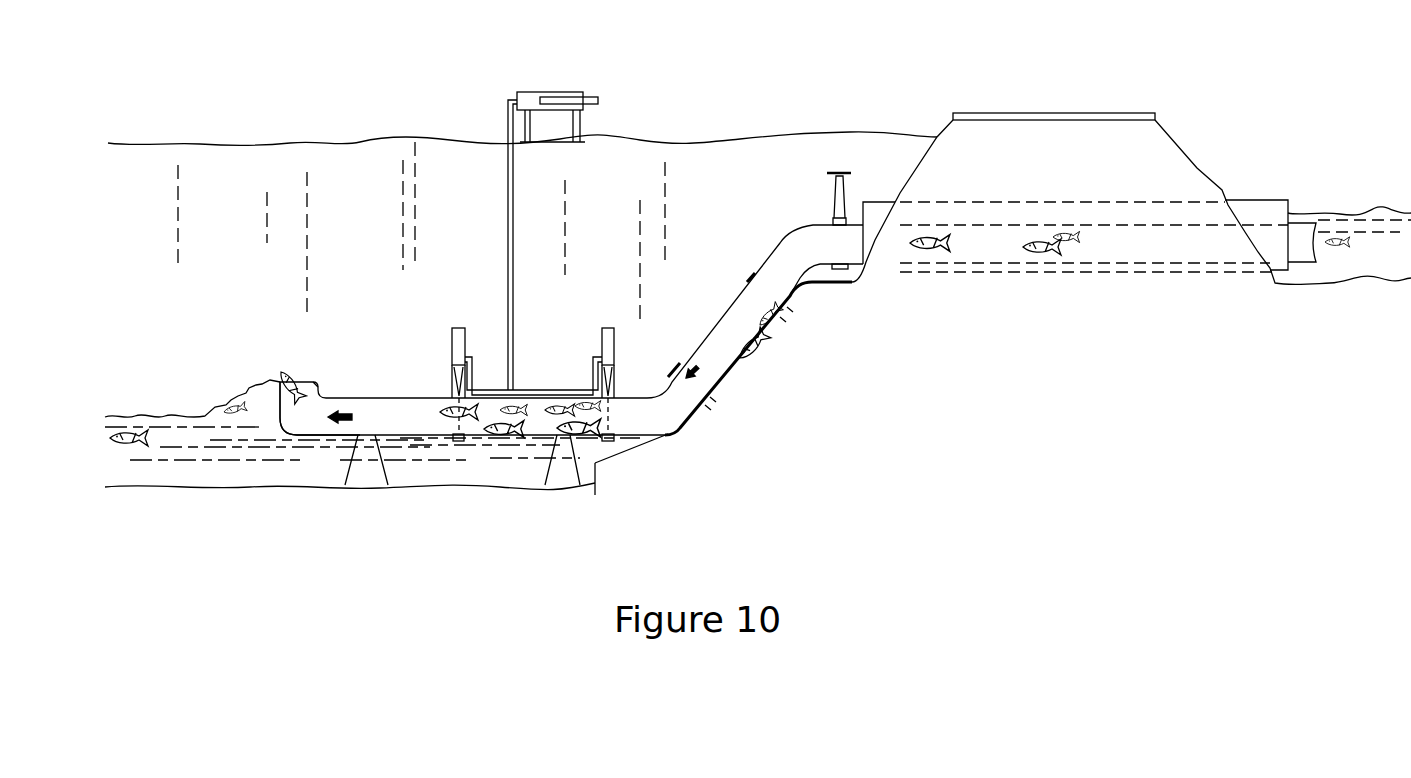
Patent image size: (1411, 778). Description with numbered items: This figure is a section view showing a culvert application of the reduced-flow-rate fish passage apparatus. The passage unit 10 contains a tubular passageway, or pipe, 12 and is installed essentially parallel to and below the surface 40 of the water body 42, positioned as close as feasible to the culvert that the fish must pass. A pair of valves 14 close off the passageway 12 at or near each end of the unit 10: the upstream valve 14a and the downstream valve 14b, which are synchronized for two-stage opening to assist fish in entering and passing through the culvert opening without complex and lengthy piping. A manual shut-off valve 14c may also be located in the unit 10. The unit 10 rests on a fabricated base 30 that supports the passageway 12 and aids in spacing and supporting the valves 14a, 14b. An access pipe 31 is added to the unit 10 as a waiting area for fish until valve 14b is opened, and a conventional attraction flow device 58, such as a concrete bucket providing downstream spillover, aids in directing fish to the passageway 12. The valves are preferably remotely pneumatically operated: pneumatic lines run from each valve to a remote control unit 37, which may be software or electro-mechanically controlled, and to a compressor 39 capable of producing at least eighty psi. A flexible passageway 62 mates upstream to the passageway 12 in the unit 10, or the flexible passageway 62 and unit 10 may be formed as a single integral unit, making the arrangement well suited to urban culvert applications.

The passage unit 10 is at (493, 339).
The passageway 12 is at (518, 427).
The valves 14 is at (535, 355).
The upstream valve 14a is at (602, 333).
The downstream valve 14b is at (457, 328).
The manual shut-off valve 14c is at (841, 272).
The base 30 is at (368, 470).
The access pipe 31 is at (368, 397).
The control unit 37 is at (524, 93).
The compressor 39 is at (593, 91).
The surface 40 is at (1325, 207).
The water body 42 is at (1330, 231).
The attraction flow device 58 is at (302, 376).
The flexible passageway 62 is at (757, 336).